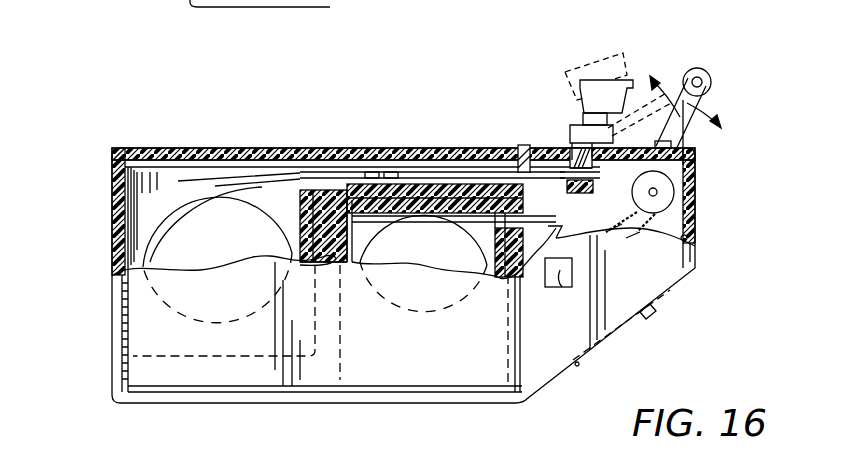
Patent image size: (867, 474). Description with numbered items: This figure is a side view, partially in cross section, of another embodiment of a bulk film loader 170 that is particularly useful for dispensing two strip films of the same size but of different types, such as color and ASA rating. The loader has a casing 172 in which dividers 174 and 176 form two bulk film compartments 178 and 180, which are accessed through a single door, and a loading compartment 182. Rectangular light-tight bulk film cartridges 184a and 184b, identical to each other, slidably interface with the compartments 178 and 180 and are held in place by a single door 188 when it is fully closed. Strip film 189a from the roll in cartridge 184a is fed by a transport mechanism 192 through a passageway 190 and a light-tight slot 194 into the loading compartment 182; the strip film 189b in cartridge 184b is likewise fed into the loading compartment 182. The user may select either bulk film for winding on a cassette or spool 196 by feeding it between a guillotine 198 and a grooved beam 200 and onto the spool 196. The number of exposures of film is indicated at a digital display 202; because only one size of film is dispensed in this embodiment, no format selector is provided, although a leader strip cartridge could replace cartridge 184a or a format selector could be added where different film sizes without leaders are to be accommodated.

The bulk film loader 170 is at (140, 150).
The casing 172 is at (202, 125).
The divider 174 is at (333, 188).
The divider 176 is at (518, 247).
The bulk film compartment 178 is at (128, 218).
The bulk film compartment 180 is at (360, 262).
The loading compartment 182 is at (680, 225).
The bulk film cartridge 184a is at (133, 184).
The bulk film cartridge 184b is at (468, 190).
The door 188 is at (140, 287).
The strip film 189a is at (262, 185).
The strip film 189b is at (563, 238).
The passageway 190 is at (413, 170).
The transport mechanism 192 is at (378, 172).
The light-tight slot 194 is at (520, 158).
The cassette or spool 196 is at (672, 182).
The guillotine 198 is at (602, 80).
The grooved beam 200 is at (568, 192).
The digital display 202 is at (557, 288).